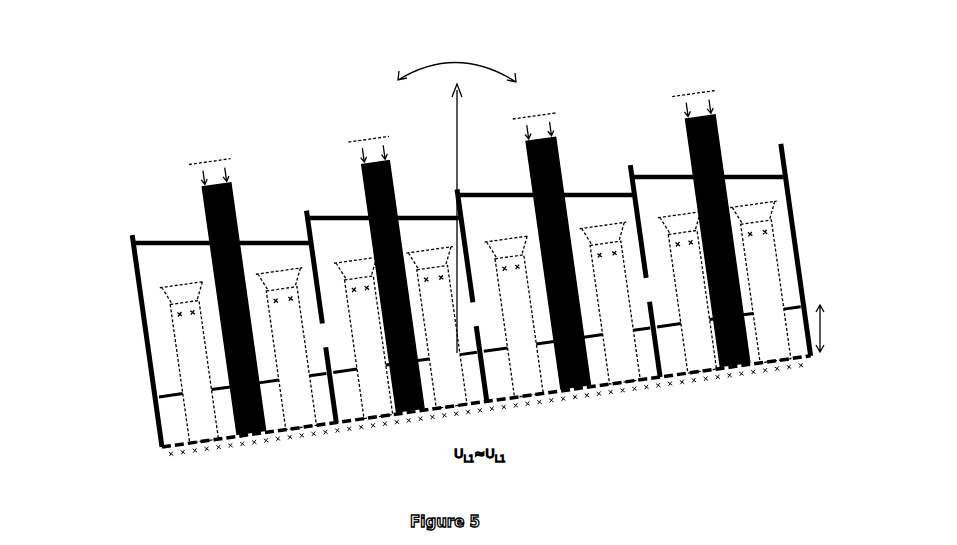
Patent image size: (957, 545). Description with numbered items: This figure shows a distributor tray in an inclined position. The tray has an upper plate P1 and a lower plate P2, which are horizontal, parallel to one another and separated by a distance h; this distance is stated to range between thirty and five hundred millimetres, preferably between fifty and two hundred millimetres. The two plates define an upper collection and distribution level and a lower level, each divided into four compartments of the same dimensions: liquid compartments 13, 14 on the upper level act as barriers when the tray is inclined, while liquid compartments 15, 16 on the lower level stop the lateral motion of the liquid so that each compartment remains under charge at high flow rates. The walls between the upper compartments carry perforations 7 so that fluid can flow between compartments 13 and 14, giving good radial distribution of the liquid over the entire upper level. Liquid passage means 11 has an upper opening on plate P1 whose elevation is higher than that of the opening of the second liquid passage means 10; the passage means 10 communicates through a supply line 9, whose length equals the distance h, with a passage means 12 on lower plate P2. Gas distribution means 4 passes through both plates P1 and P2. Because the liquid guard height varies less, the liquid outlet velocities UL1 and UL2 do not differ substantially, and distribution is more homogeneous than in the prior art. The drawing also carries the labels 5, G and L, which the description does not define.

The gas distribution means 4 is at (521, 153).
The support pillar 5 is at (630, 384).
The perforation 7 is at (512, 378).
The supply line 9 is at (478, 316).
The second liquid passage means 10 is at (660, 292).
The liquid passage means 11 is at (436, 259).
The liquid passage means on lower plate 12 is at (674, 383).
The liquid compartment 13 is at (272, 248).
The liquid compartment 14 is at (337, 221).
The liquid compartment 15 is at (305, 431).
The liquid compartment 16 is at (367, 398).
The upper plate P1 is at (147, 394).
The lower plate P2 is at (155, 438).
The gap above blade G is at (550, 137).
The liquid level L is at (592, 186).
The distance between plates h is at (829, 328).
The liquid outlet velocity UL1 is at (211, 484).
The liquid outlet velocity UL2 is at (748, 368).